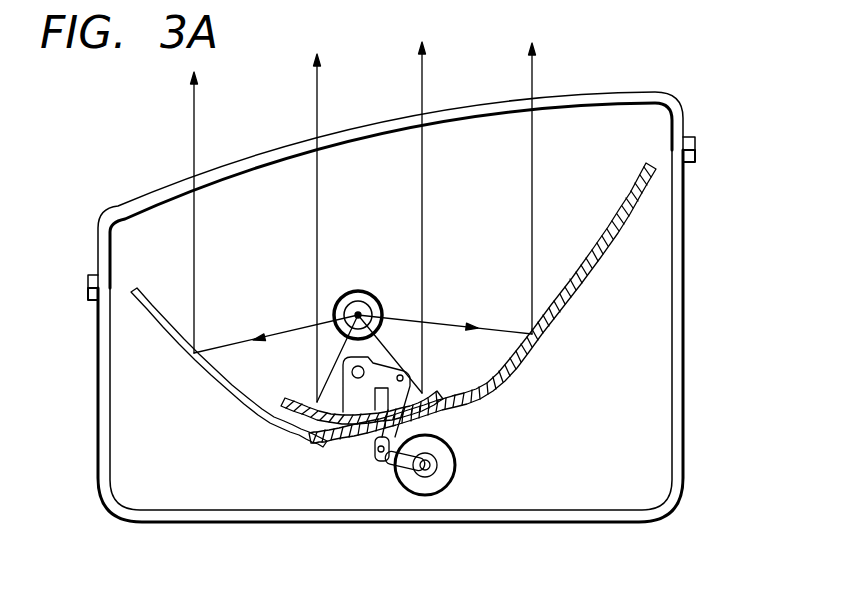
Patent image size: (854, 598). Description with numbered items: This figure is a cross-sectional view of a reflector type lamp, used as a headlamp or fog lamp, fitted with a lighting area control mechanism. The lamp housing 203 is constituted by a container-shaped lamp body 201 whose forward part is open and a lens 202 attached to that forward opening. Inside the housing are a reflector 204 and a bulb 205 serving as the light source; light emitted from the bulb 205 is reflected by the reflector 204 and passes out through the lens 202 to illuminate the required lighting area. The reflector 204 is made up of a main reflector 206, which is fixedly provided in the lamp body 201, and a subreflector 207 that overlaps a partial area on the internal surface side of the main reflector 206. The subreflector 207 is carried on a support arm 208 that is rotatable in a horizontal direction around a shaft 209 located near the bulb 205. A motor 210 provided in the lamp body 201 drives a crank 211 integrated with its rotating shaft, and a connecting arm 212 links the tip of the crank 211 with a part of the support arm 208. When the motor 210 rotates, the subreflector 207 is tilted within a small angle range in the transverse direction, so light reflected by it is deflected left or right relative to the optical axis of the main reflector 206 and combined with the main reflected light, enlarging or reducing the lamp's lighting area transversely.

The lamp body 201 is at (429, 303).
The lens 202 is at (620, 92).
The lamp housing 203 is at (655, 402).
The reflector 204 is at (614, 258).
The bulb 205 is at (358, 292).
The main reflector 206 is at (512, 378).
The subreflector 207 is at (297, 400).
The support arm 208 is at (322, 433).
The shaft 209 is at (362, 367).
The motor 210 is at (437, 487).
The crank 211 is at (393, 472).
The connecting arm 212 is at (367, 447).